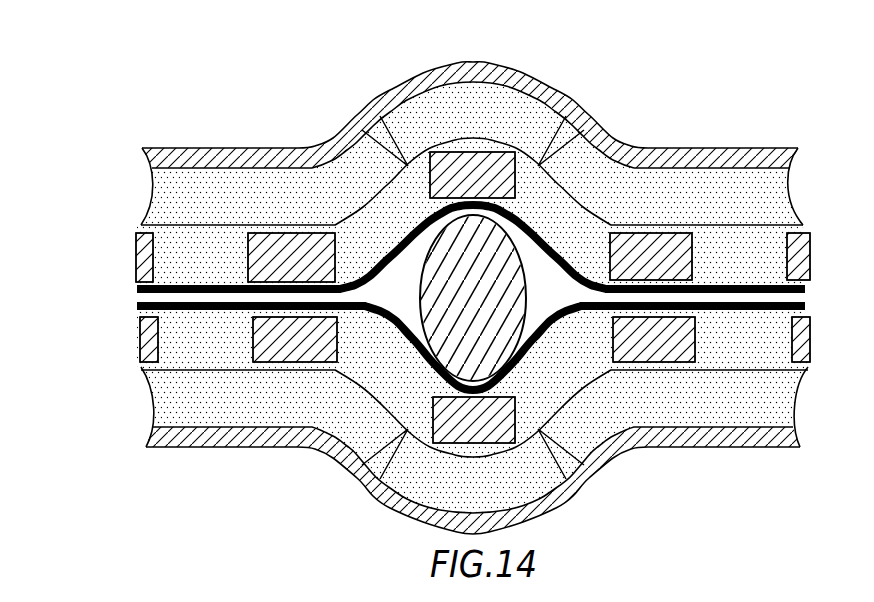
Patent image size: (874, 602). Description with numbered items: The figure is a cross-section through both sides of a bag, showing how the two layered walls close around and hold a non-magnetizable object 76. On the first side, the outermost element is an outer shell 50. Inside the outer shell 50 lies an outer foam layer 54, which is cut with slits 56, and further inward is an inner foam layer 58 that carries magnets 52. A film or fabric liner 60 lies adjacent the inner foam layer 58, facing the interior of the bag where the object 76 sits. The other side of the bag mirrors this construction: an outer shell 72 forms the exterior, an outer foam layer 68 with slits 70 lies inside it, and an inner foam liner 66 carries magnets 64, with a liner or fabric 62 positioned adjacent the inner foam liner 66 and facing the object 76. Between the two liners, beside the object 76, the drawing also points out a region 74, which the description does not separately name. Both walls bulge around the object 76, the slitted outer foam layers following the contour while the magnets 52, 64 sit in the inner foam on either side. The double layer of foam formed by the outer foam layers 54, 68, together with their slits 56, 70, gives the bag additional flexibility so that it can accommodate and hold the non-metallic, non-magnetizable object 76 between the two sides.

The outer shell 50 is at (753, 447).
The magnets 52 is at (659, 340).
The outer foam layer 54 is at (152, 424).
The slits 56 is at (350, 477).
The inner foam layer 58 is at (140, 360).
The film or fabric liner 60 is at (140, 306).
The liner or fabric 62 is at (140, 289).
The magnets 64 is at (140, 257).
The inner foam liner 66 is at (137, 233).
The outer foam layer 68 is at (373, 102).
The slits 70 is at (590, 113).
The outer shell 72 is at (152, 147).
The cavity 74 is at (407, 292).
The non-magnetizable object 76 is at (500, 237).